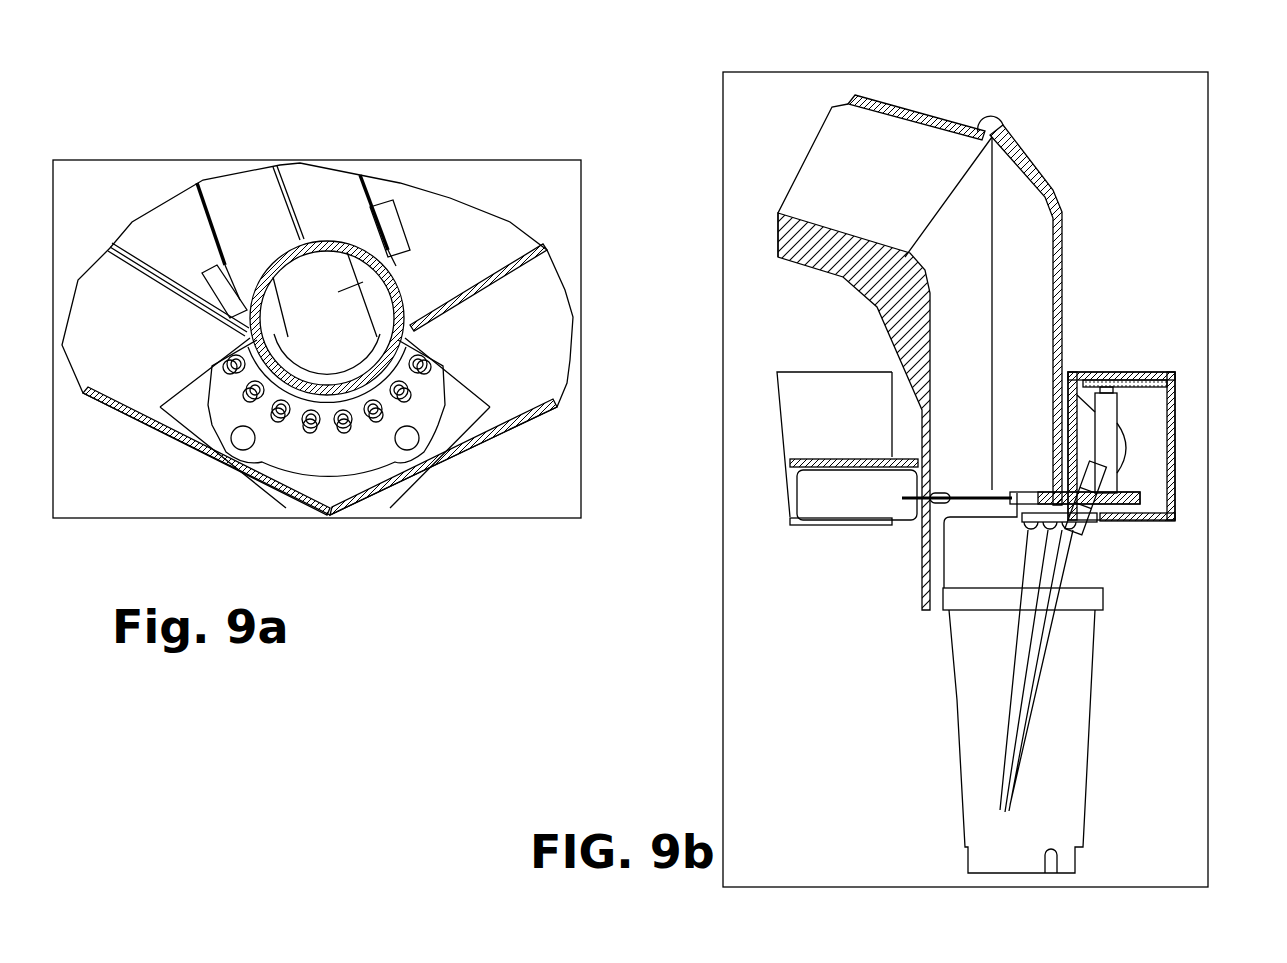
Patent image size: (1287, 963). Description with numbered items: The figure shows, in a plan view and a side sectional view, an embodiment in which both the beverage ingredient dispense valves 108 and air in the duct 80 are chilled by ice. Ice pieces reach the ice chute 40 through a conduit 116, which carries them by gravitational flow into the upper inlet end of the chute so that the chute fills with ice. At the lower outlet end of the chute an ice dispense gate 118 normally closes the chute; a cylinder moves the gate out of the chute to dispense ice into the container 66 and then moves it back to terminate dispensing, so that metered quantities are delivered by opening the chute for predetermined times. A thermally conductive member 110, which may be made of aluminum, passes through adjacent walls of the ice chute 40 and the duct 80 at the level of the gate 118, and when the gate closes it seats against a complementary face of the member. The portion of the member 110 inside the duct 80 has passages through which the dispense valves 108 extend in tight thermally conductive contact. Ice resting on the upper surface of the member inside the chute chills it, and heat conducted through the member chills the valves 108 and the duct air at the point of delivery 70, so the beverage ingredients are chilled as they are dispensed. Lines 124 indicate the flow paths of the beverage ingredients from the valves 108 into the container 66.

In FIG. 9A, the ice chute 40 is at (405, 292).
In FIG. 9B, the ice chute 40 is at (1057, 287).
In FIG. 9B, the container 66 is at (970, 752).
In FIG. 9A, the point of delivery 70 is at (333, 500).
In FIG. 9B, the point of delivery 70 is at (1145, 405).
In FIG. 9A, the duct 80 is at (150, 438).
In FIG. 9B, the duct 80 is at (1175, 425).
In FIG. 9A, the beverage ingredient dispense valves 108 is at (277, 422).
In FIG. 9B, the beverage ingredient dispense valves 108 is at (1102, 525).
In FIG. 9A, the thermally conductive member 110 is at (412, 333).
In FIG. 9B, the thermally conductive member 110 is at (1175, 500).
In FIG. 9B, the conduit 116 is at (913, 115).
In FIG. 9A, the ice dispense gate 118 is at (395, 258).
In FIG. 9B, the ice dispense gate 118 is at (940, 525).
In FIG. 9B, the lines 124 is at (1040, 676).